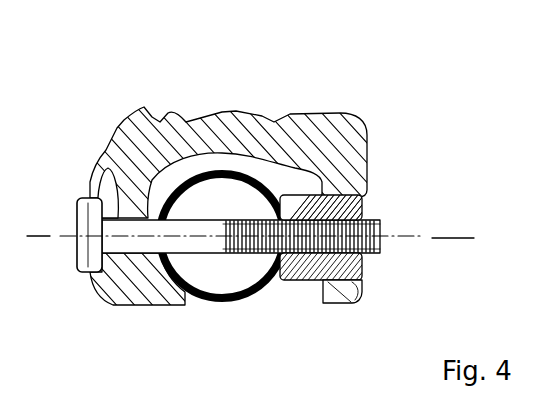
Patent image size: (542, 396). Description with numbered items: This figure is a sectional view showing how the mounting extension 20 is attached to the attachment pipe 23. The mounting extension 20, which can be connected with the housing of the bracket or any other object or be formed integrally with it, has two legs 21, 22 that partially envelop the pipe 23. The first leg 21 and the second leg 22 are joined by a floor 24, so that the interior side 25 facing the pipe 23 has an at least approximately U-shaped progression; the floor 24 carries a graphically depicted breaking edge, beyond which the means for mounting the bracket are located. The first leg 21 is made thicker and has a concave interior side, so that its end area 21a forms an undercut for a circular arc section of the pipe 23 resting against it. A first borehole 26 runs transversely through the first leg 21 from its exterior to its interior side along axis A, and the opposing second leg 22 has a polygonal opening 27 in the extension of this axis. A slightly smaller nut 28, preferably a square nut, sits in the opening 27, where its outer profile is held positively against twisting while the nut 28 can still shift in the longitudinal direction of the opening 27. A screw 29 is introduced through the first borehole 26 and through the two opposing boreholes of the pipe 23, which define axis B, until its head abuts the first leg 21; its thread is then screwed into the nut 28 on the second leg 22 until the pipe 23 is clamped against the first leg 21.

The mounting extension 20 is at (247, 182).
The first leg 21 is at (112, 282).
The end area of the first leg 21a is at (190, 309).
The second leg 22 is at (358, 285).
The pipe 23 is at (240, 299).
The floor 24 is at (178, 137).
The interior side 25 is at (258, 172).
The first borehole 26 is at (98, 163).
The opening 27 is at (367, 208).
The nut 28 is at (315, 268).
The screw 29 is at (113, 212).